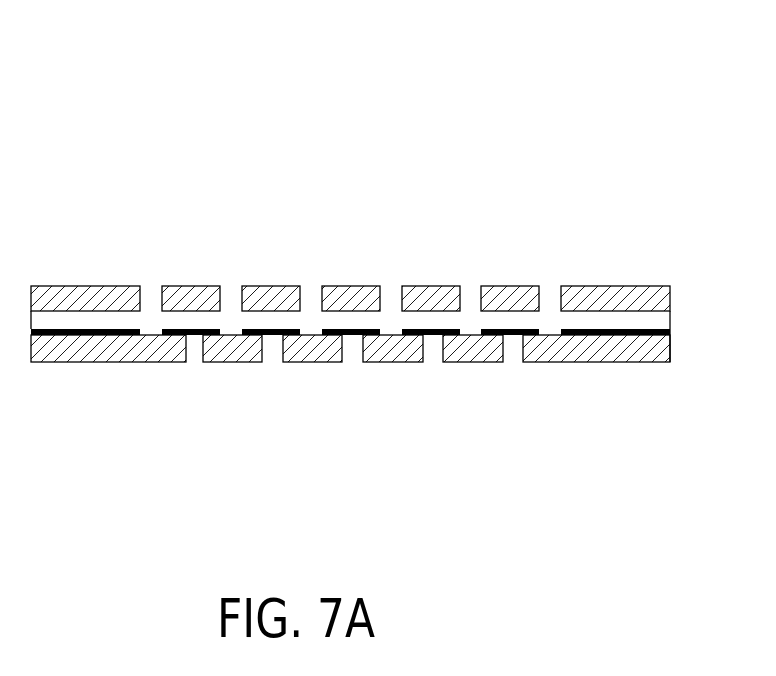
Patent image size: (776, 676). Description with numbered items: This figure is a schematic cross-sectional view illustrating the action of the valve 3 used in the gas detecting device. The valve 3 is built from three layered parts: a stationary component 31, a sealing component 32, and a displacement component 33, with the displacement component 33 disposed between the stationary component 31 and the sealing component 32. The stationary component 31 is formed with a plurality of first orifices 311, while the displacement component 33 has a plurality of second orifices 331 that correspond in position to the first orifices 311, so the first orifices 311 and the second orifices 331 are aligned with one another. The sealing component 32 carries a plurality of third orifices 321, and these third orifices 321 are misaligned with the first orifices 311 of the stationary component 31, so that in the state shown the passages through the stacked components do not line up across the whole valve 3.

The valve 3 is at (737, 46).
The stationary component 31 is at (668, 298).
The first orifices 311 is at (549, 300).
The displacement component 33 is at (668, 333).
The second orifices 331 is at (552, 333).
The sealing component 32 is at (665, 360).
The third orifices 321 is at (509, 355).